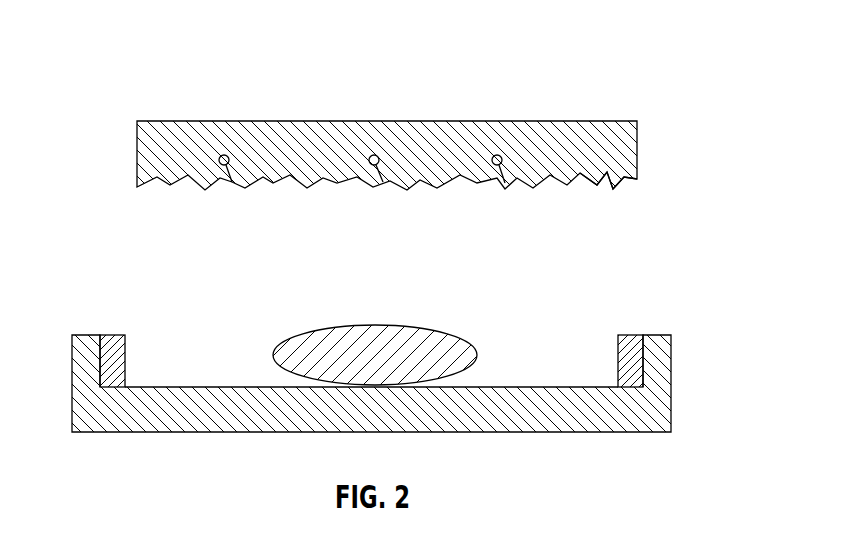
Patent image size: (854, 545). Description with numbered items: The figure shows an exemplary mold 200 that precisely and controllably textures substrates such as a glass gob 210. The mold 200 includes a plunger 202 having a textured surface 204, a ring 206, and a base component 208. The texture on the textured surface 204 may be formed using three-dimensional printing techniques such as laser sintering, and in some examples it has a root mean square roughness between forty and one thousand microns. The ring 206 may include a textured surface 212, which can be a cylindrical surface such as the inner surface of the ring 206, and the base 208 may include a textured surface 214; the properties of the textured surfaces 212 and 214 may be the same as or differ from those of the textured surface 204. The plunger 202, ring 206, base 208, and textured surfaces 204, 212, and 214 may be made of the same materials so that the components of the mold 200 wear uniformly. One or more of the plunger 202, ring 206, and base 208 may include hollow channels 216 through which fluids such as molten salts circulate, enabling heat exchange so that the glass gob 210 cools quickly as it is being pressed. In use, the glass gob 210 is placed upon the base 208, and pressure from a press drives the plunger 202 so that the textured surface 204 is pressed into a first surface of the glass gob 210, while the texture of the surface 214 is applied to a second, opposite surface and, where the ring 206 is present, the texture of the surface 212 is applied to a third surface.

The mold 200 is at (119, 37).
The plunger 202 is at (490, 120).
The textured surface 204 is at (612, 188).
The ring 206 is at (630, 335).
The base component 208 is at (672, 385).
The glass gob 210 is at (375, 325).
The textured surface 212 is at (126, 360).
The textured surface 214 is at (228, 387).
The hollow channels 216 is at (232, 182).